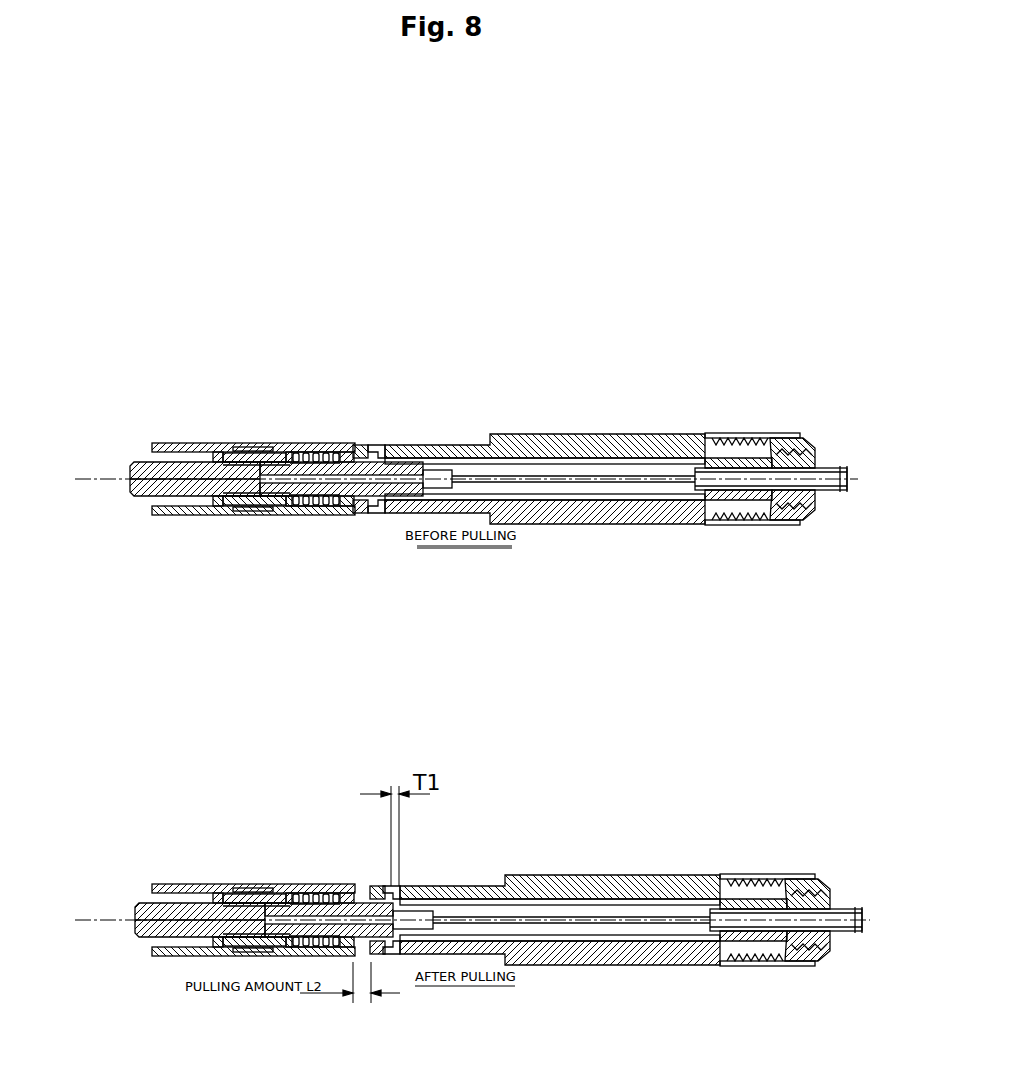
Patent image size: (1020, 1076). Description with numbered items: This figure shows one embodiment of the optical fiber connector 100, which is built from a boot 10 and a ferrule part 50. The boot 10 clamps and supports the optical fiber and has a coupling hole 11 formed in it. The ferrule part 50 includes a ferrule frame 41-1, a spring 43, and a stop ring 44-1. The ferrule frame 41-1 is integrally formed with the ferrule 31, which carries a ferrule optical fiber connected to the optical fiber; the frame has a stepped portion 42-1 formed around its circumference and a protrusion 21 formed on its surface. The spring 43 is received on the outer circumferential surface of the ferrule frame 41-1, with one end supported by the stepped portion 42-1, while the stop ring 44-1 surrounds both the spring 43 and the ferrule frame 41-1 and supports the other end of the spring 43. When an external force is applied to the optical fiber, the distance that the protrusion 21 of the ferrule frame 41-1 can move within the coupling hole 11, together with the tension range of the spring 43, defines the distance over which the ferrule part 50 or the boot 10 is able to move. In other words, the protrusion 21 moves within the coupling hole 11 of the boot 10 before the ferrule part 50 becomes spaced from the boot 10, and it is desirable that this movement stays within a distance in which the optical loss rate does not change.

The optical fiber connector 100 is at (146, 286).
The ferrule part 50 is at (160, 428).
The ferrule 31 is at (178, 441).
The stepped portion 42-1 is at (268, 441).
The spring 43 is at (295, 441).
The stop ring 44-1 is at (313, 441).
The ferrule frame 41-1 is at (336, 518).
The coupling hole 11 is at (362, 441).
The protrusion 21 is at (380, 441).
The boot 10 is at (680, 433).